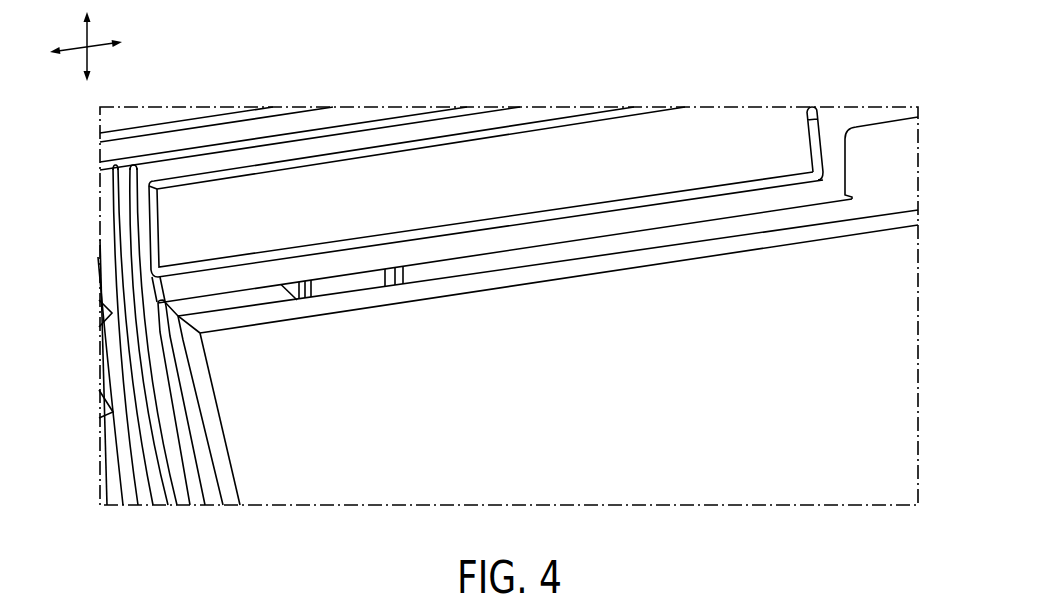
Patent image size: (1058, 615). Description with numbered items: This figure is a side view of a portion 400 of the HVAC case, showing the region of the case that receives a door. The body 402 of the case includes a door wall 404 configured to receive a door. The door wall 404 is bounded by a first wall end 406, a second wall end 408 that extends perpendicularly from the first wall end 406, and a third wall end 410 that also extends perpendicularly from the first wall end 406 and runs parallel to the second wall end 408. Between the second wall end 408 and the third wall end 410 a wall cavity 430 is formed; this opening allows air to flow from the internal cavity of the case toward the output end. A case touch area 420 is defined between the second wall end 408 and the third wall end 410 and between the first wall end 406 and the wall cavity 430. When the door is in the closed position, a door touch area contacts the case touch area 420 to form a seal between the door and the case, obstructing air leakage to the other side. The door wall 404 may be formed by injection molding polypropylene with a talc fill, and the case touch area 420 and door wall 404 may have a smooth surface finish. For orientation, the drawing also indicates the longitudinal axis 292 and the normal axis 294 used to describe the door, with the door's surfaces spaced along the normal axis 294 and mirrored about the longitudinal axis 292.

The longitudinal axis 292 is at (92, 44).
The normal axis 294 is at (91, 33).
The portion 400 is at (229, 109).
The body 402 is at (708, 131).
The door wall 404 is at (920, 209).
The first wall end 406 is at (163, 308).
The second wall end 408 is at (349, 276).
The third wall end 410 is at (494, 277).
The case touch area 420 is at (260, 318).
The wall cavity 430 is at (648, 237).